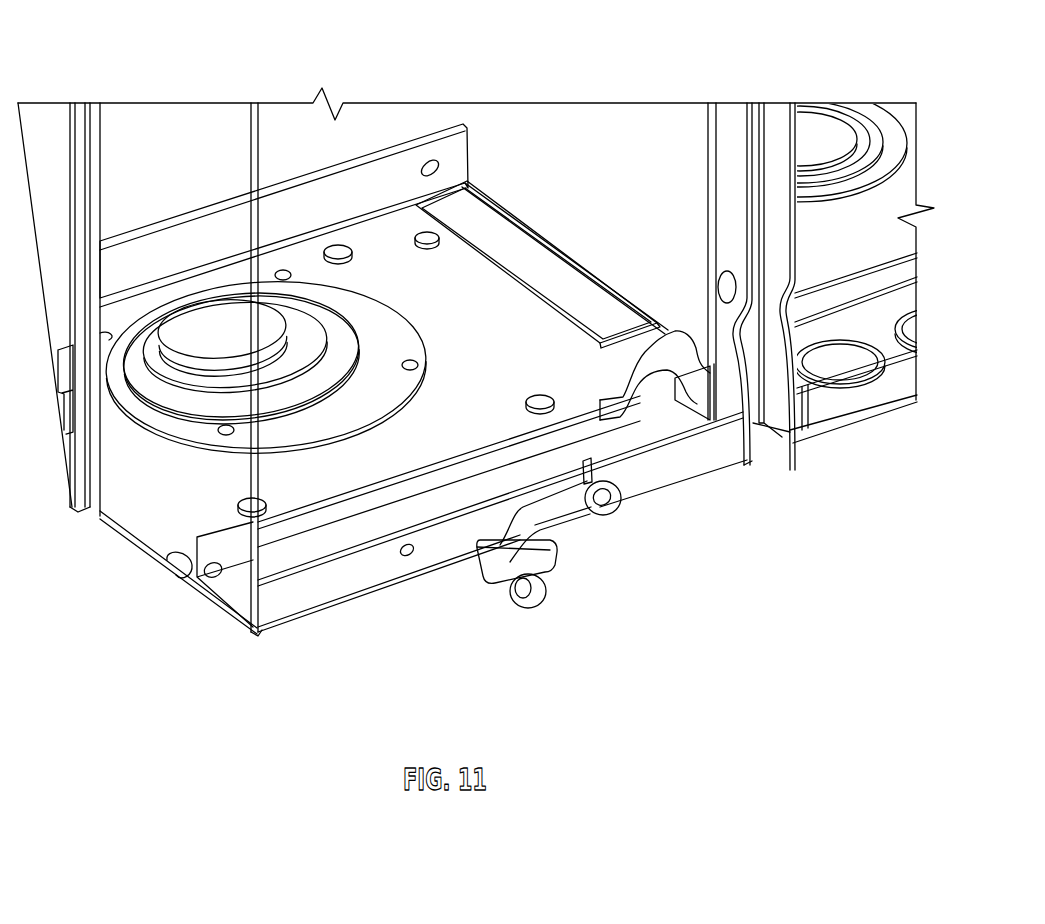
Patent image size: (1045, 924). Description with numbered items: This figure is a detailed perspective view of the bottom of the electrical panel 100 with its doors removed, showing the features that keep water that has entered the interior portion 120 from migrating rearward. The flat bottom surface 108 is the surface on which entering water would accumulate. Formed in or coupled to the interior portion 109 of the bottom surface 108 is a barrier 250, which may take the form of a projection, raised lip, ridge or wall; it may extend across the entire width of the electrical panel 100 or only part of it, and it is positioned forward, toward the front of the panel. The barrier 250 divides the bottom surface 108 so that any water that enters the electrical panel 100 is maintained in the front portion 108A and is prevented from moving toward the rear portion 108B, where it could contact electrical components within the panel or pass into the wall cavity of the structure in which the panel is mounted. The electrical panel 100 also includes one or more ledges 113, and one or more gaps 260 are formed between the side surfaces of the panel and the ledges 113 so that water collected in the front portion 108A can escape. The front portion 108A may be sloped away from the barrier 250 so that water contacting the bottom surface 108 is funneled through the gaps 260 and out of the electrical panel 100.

The electrical panel 100 is at (120, 88).
The interior portion 120 is at (333, 218).
The bottom surface 108 is at (453, 287).
The rear portion 108B is at (388, 277).
The front portion 108A is at (370, 523).
The barrier 250 is at (307, 523).
The gap 260 is at (259, 630).
The interior portion of the bottom surface 109 is at (553, 365).
The ledge 113 is at (383, 560).